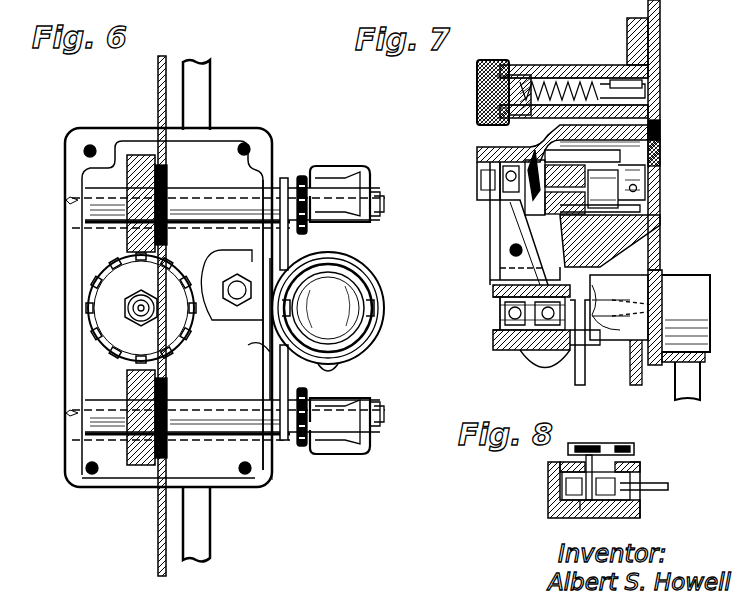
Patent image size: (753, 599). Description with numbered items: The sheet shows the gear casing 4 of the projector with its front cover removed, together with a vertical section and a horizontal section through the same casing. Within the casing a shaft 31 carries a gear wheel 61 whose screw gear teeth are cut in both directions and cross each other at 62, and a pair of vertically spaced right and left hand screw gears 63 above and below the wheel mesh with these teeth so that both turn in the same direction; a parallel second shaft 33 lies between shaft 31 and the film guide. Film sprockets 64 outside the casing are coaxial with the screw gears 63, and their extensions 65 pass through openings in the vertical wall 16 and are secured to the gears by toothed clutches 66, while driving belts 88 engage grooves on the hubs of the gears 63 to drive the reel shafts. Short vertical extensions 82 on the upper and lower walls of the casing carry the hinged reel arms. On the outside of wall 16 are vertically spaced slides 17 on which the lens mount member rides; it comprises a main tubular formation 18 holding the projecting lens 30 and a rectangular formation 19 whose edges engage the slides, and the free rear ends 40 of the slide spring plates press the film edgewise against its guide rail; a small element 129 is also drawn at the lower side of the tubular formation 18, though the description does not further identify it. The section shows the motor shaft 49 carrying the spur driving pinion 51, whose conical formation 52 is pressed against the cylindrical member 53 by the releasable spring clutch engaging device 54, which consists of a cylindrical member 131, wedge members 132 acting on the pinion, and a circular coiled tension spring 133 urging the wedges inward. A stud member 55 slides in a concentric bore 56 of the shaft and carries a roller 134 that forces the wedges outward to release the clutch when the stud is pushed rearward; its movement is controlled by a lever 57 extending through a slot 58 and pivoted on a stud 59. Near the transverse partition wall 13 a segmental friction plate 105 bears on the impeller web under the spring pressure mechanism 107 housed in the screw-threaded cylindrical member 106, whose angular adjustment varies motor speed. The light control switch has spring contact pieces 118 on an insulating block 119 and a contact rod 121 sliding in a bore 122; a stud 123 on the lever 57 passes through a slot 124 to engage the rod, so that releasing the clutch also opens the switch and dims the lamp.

In FIG. 6, the gear casing 4 is at (128, 135).
In FIG. 7, the gear casing 4 is at (478, 150).
In FIG. 8, the gear casing 4 is at (550, 504).
In FIG. 7, the transverse front partition wall 13 is at (660, 32).
In FIG. 6, the vertical forwardly and rearwardly extending wall 16 is at (272, 165).
In FIG. 6, the slides 17 is at (300, 244).
In FIG. 6, the main tubular formation 18 is at (362, 284).
In FIG. 6, the rectangular formation 19 is at (250, 350).
In FIG. 6, the projecting lens 30 is at (364, 300).
In FIG. 6, the shaft 31 is at (120, 307).
In FIG. 6, the second shaft 33 is at (237, 285).
In FIG. 6, the rear ends of spring plates 40 is at (278, 242).
In FIG. 7, the motor shaft 49 is at (622, 186).
In FIG. 7, the spur driving pinion 51 is at (645, 218).
In FIG. 7, the conical formation 52 is at (600, 212).
In FIG. 7, the cylindrical member 53 is at (648, 172).
In FIG. 7, the releasable spring clutch engaging device 54 is at (500, 146).
In FIG. 7, the stud member 55 is at (480, 172).
In FIG. 7, the concentric bore 56 is at (640, 186).
In FIG. 7, the lever 57 is at (510, 238).
In FIG. 8, the lever 57 is at (632, 450).
In FIG. 7, the slot 58 is at (498, 212).
In FIG. 7, the stud 59 is at (510, 250).
In FIG. 6, the gear wheel 61 is at (112, 316).
In FIG. 6, the crossing screw gear teeth 62 is at (95, 330).
In FIG. 6, the right and left hand screw gears 63 is at (138, 155).
In FIG. 6, the film sprockets 64 is at (328, 185).
In FIG. 6, the extensions 65 is at (255, 180).
In FIG. 6, the toothed clutches 66 is at (222, 185).
In FIG. 6, the short vertical extensions 82 is at (197, 80).
In FIG. 6, the driving belts 88 is at (158, 64).
In FIG. 7, the segmental friction plate 105 is at (662, 130).
In FIG. 7, the cylindrical member 106 is at (480, 92).
In FIG. 7, the spring pressure mechanism 107 is at (602, 92).
In FIG. 7, the spring contact pieces 118 is at (612, 270).
In FIG. 7, the insulating block 119 is at (660, 270).
In FIG. 7, the contact rod 121 is at (578, 350).
In FIG. 8, the contact rod 121 is at (652, 486).
In FIG. 7, the bore 122 is at (508, 335).
In FIG. 8, the bore 122 is at (572, 510).
In FIG. 7, the stud 123 is at (496, 290).
In FIG. 8, the stud 123 is at (570, 466).
In FIG. 7, the slot 124 is at (504, 312).
In FIG. 8, the slot 124 is at (564, 488).
In FIG. 6, the tab 129 is at (346, 362).
In FIG. 7, the cylindrical member 131 is at (498, 188).
In FIG. 7, the wedge members 132 is at (552, 86).
In FIG. 7, the circular coiled tension spring 133 is at (548, 90).
In FIG. 7, the roller 134 is at (662, 150).